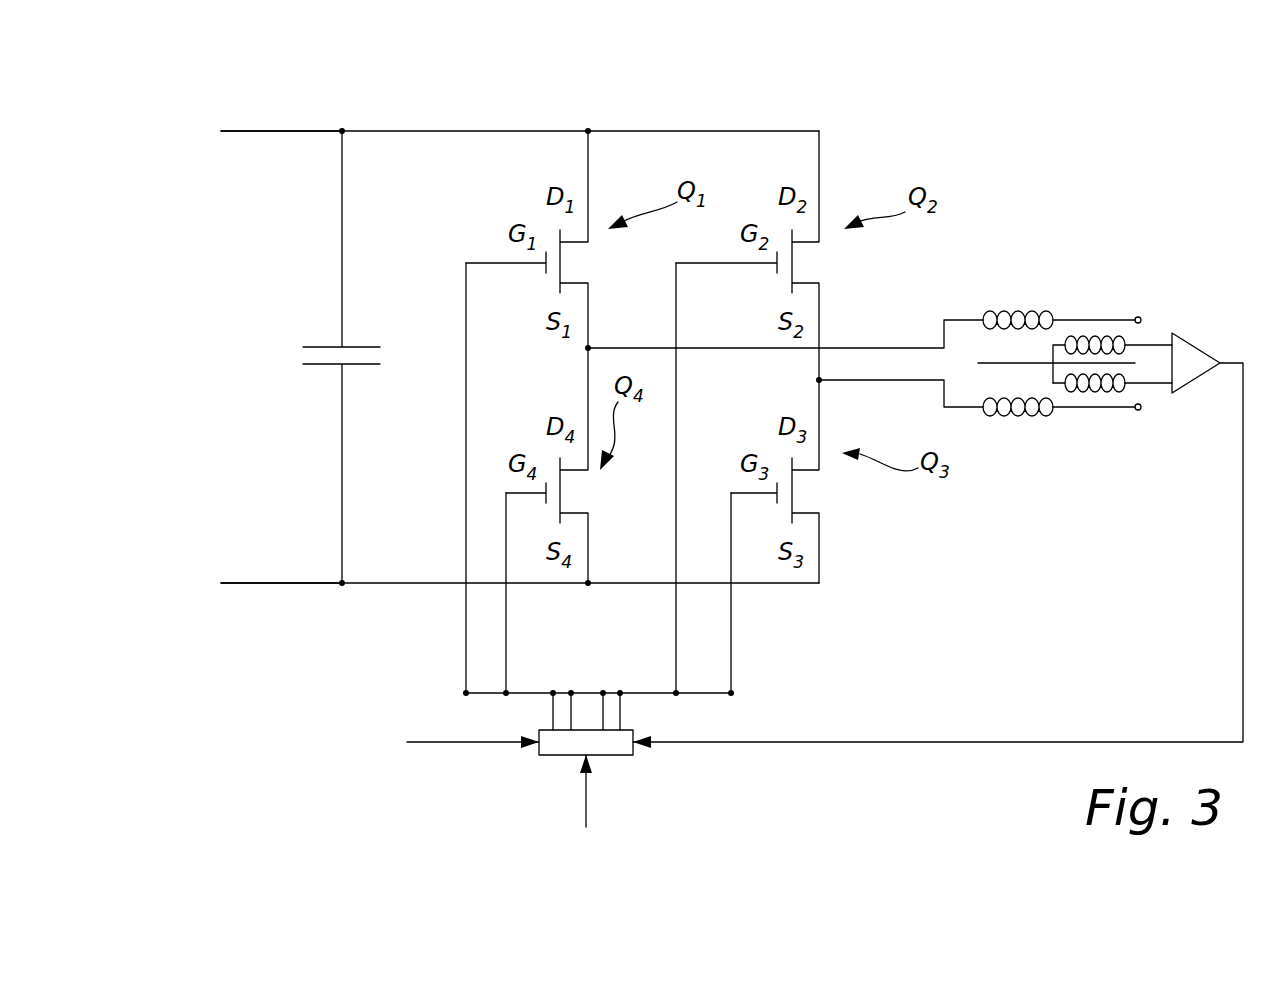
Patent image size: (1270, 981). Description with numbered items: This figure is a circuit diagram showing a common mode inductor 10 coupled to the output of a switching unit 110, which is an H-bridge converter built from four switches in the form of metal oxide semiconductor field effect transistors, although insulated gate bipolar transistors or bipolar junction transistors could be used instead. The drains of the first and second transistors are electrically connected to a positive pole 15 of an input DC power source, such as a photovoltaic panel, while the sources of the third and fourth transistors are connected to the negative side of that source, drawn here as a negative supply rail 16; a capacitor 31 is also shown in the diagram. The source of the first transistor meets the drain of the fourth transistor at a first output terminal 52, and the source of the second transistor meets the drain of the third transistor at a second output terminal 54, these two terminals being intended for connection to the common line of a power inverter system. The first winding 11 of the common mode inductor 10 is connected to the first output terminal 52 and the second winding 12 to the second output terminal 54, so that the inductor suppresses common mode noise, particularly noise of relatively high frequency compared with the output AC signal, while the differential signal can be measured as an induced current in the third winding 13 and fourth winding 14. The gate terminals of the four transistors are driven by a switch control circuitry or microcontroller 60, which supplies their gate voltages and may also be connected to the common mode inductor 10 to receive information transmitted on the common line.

The switching unit 110 is at (722, 72).
The common mode inductor 10 is at (1094, 180).
The positive pole 15 is at (265, 131).
The negative supply rail 16 is at (247, 583).
The capacitor 31 is at (323, 364).
The first output terminal 52 is at (848, 348).
The second output terminal 54 is at (870, 380).
The first winding 11 is at (1014, 298).
The second winding 12 is at (1014, 427).
The third winding 13 is at (1097, 345).
The fourth winding 14 is at (1085, 385).
The switch control circuitry or microcontroller 60 is at (555, 755).